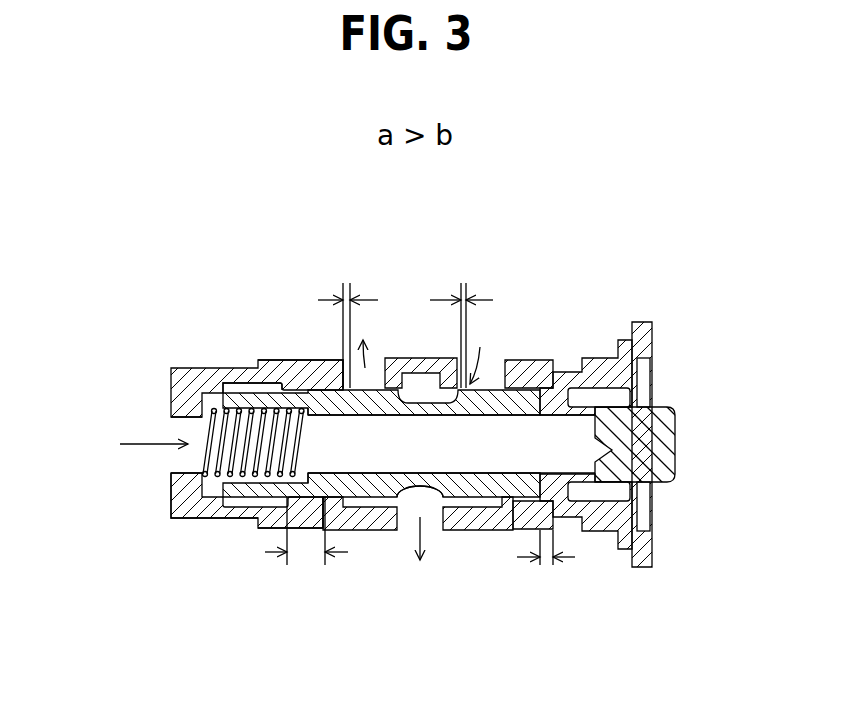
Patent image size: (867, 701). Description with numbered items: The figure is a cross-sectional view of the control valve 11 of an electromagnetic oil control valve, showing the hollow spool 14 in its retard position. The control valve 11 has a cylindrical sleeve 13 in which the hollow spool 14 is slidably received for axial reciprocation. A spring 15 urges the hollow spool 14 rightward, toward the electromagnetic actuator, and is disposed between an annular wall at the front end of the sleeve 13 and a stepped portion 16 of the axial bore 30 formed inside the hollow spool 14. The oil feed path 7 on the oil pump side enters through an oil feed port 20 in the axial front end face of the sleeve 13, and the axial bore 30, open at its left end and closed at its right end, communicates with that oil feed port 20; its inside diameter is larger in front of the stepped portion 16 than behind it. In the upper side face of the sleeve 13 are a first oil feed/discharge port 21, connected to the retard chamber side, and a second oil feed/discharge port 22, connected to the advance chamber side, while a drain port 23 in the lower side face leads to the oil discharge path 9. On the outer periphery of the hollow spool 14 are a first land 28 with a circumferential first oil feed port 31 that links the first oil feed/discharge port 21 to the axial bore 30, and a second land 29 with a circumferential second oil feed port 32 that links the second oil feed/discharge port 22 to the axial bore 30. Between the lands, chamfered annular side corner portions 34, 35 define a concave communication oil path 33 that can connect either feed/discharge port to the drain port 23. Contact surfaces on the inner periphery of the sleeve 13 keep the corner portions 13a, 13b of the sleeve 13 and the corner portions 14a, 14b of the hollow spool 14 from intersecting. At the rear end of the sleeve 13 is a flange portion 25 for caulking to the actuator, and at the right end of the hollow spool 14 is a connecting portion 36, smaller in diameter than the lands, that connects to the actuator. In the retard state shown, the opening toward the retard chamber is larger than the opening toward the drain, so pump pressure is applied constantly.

The oil feed path 7 is at (135, 444).
The oil discharge path 9 is at (407, 573).
The control valve 11 is at (415, 414).
The sleeve 13 is at (195, 368).
The corner portion of sleeve 13a is at (295, 360).
The corner portion of sleeve 13b is at (552, 362).
The hollow spool 14 is at (657, 405).
The corner portion of hollow spool 14a is at (290, 513).
The corner portion of hollow spool 14b is at (560, 505).
The spring 15 is at (182, 519).
The stepped portion 16 is at (265, 380).
The oil feed port 20 is at (180, 462).
The first oil feed/discharge port 21 is at (375, 375).
The second oil feed/discharge port 22 is at (487, 383).
The drain port 23 is at (437, 503).
The flange portion 25 is at (643, 322).
The first land 28 is at (357, 531).
The second land 29 is at (525, 531).
The axial bore 30 is at (583, 452).
The first oil feed port 31 is at (311, 388).
The second oil feed port 32 is at (528, 395).
The communication oil path 33 is at (420, 390).
The side corner portion 34 is at (392, 530).
The side corner portion 35 is at (463, 507).
The connecting portion 36 is at (673, 410).